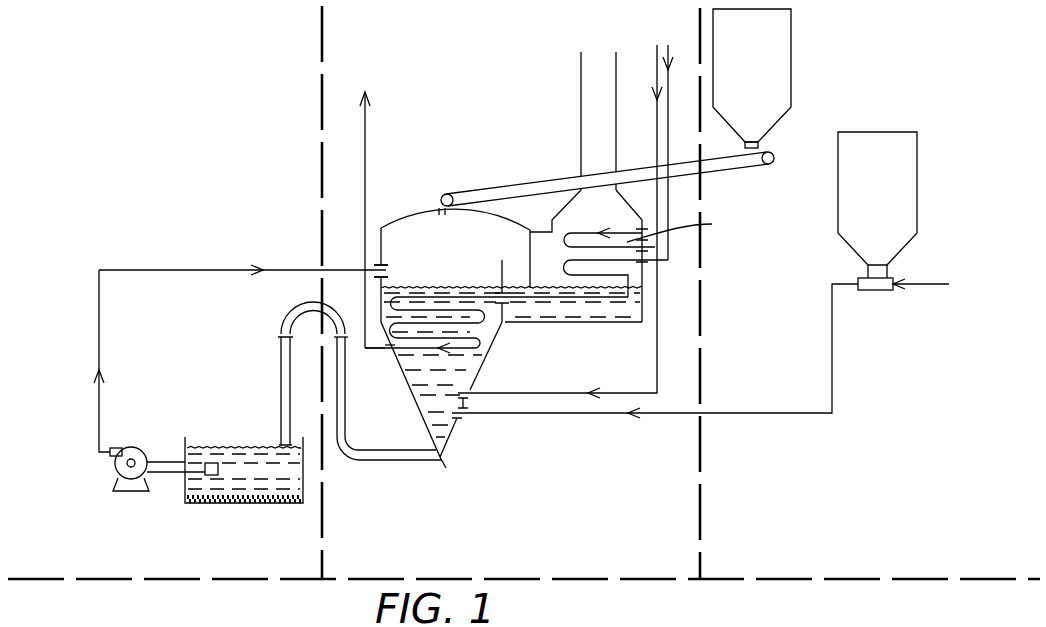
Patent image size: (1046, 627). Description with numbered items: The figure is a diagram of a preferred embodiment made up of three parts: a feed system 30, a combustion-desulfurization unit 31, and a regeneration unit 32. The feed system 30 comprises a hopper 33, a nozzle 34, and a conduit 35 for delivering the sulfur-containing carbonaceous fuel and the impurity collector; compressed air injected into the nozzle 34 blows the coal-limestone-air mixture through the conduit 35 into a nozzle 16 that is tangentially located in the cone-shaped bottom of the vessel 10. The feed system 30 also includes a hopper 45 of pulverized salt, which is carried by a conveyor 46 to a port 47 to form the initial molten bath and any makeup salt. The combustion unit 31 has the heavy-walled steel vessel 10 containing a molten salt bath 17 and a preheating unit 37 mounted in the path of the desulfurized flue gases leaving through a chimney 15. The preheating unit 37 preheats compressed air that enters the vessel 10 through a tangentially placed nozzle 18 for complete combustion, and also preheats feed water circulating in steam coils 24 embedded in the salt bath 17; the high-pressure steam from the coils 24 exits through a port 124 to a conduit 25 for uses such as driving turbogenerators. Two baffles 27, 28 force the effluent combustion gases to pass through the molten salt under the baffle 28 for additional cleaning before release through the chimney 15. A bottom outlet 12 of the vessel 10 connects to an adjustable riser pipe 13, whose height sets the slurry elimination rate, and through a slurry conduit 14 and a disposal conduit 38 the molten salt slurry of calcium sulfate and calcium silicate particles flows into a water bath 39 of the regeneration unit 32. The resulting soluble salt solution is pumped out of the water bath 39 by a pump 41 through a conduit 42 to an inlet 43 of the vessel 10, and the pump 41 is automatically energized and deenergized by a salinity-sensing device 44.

The vessel 10 is at (392, 224).
The bottom outlet 12 is at (444, 462).
The adjustable riser pipe 13 is at (338, 428).
The slurry conduit 14 is at (300, 306).
The chimney 15 is at (588, 85).
The nozzle 16 is at (458, 418).
The molten salt bath 17 is at (487, 352).
The nozzle 18 is at (462, 393).
The steam coils 24 is at (452, 288).
The conduit 25 is at (366, 138).
The baffle 27 is at (503, 325).
The baffle 28 is at (532, 236).
The feed system 30 is at (820, 540).
The combustion-desulfurization unit 31 is at (572, 523).
The regeneration unit 32 is at (120, 550).
The hopper 33 is at (890, 152).
The nozzle 34 is at (866, 291).
The conduit 35 is at (833, 396).
The preheating unit 37 is at (650, 255).
The disposal conduit 38 is at (281, 398).
The water bath 39 is at (290, 503).
The pump 41 is at (133, 449).
The conduit 42 is at (291, 269).
The inlet 43 is at (387, 270).
The salinity-sensing device 44 is at (210, 476).
The hopper 45 is at (773, 55).
The conveyor 46 is at (522, 185).
The port 47 is at (440, 200).
The port 124 is at (373, 350).